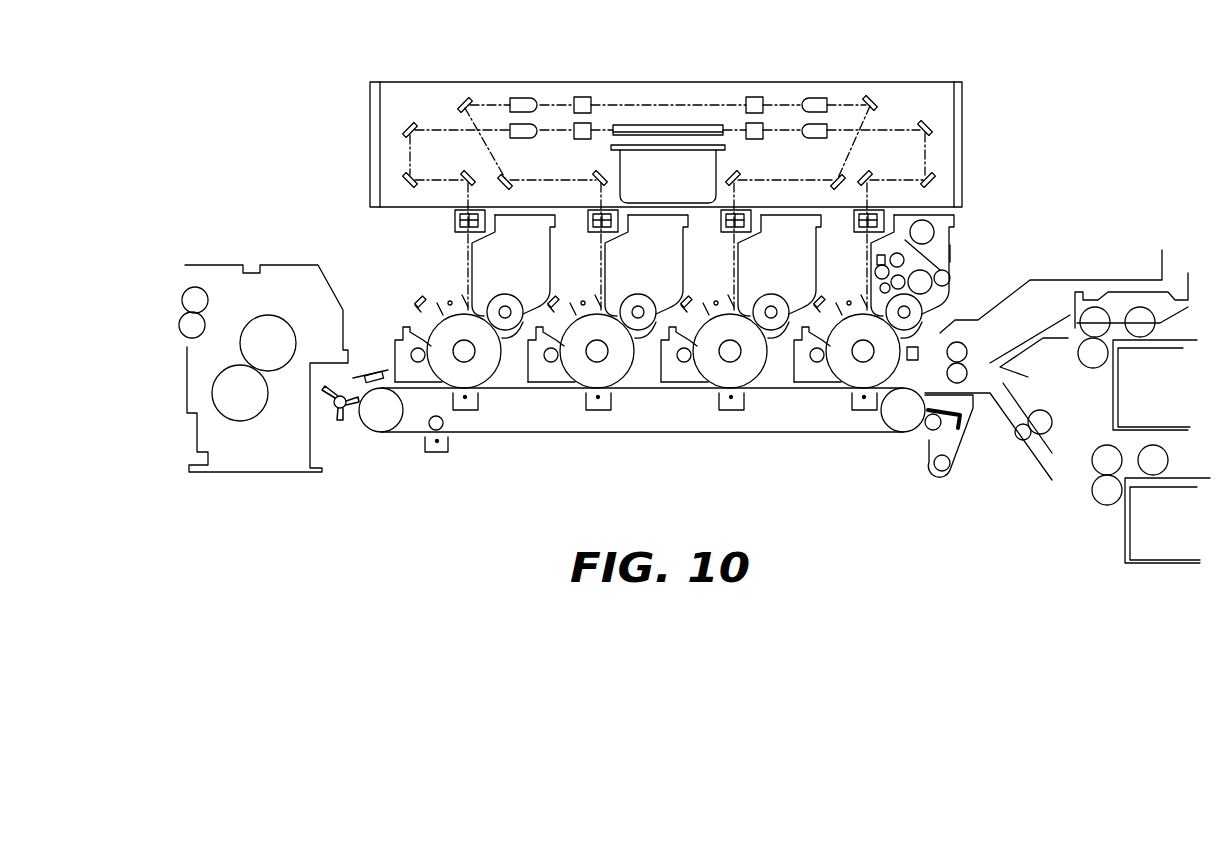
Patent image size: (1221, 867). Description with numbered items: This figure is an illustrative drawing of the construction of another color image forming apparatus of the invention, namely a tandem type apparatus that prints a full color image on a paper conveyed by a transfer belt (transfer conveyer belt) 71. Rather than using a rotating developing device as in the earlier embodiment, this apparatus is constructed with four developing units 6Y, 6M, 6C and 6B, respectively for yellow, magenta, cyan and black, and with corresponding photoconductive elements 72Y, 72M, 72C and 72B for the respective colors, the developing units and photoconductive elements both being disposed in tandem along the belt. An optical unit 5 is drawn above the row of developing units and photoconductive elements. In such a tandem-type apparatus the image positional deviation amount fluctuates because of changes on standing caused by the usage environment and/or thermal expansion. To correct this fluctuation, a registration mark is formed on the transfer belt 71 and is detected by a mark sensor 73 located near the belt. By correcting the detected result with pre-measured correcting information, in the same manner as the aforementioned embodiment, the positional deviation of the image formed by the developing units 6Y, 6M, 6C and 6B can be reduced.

The optical scanning unit 5 is at (722, 82).
The developing unit 6Y is at (483, 266).
The developing unit 6M is at (673, 262).
The developing unit 6C is at (817, 272).
The developing unit 6B is at (953, 255).
The photoconductive element 72Y is at (489, 375).
The photoconductive element 72M is at (622, 375).
The photoconductive element 72C is at (756, 378).
The photoconductive element 72B is at (839, 381).
The transfer belt 71 is at (685, 433).
The mark sensor 73 is at (376, 366).